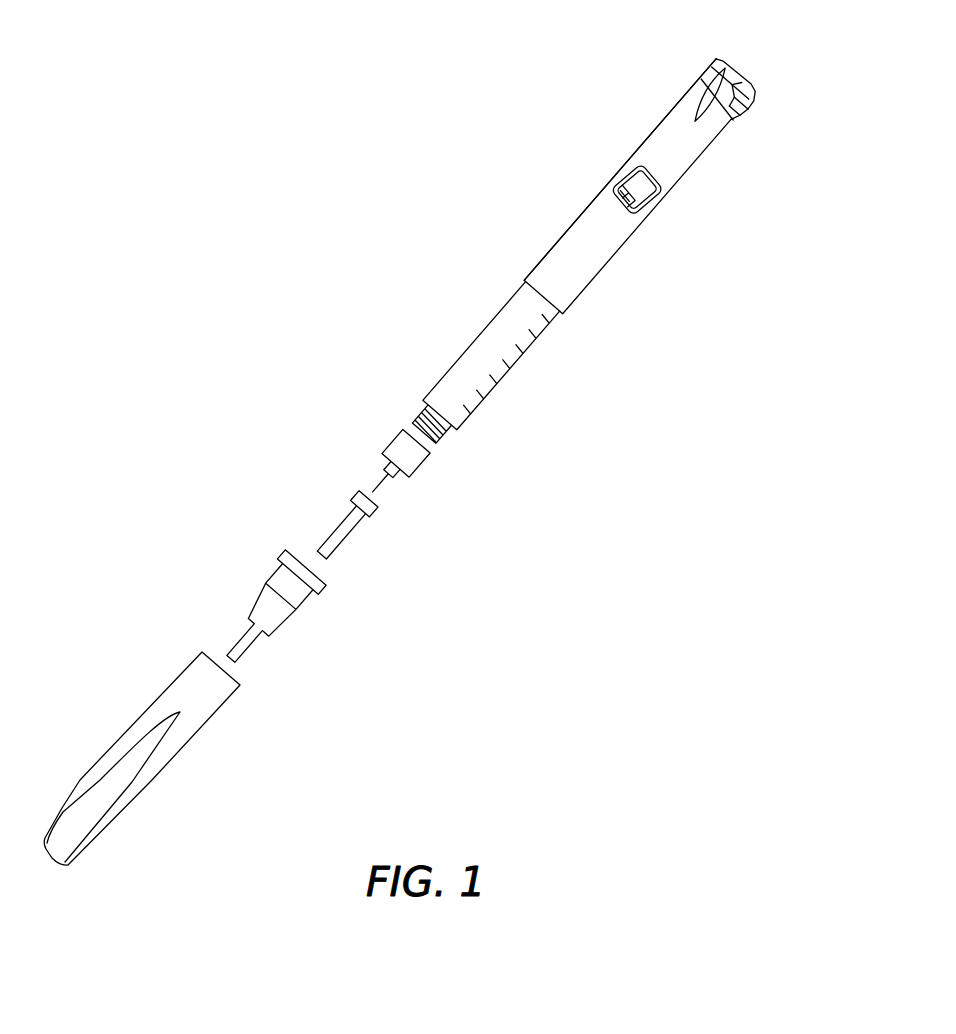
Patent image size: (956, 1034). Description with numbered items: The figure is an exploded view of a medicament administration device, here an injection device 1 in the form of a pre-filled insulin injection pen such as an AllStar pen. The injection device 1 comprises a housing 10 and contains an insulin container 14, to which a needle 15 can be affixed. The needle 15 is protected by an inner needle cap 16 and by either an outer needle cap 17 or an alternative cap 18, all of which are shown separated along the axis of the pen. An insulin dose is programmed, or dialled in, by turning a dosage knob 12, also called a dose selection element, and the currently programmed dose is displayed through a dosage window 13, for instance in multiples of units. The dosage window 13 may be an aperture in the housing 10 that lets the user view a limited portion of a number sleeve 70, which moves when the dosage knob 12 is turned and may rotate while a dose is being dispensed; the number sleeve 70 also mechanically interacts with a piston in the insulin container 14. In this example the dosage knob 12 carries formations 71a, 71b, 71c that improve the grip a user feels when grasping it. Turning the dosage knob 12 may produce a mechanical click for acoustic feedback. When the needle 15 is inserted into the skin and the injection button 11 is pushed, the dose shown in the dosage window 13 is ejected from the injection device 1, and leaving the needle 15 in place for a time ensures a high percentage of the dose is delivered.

The injection device 1 is at (456, 237).
The housing 10 is at (572, 230).
The injection button 11 is at (743, 50).
The dosage knob 12 is at (684, 69).
The dosage window 13 is at (651, 157).
The insulin container 14 is at (478, 344).
The needle 15 is at (398, 447).
The inner needle cap 16 is at (333, 527).
The outer needle cap 17 is at (278, 572).
The cap 18 is at (182, 682).
The number sleeve 70 is at (664, 200).
The formation 71a is at (744, 116).
The formation 71b is at (746, 82).
The formation 71c is at (705, 80).